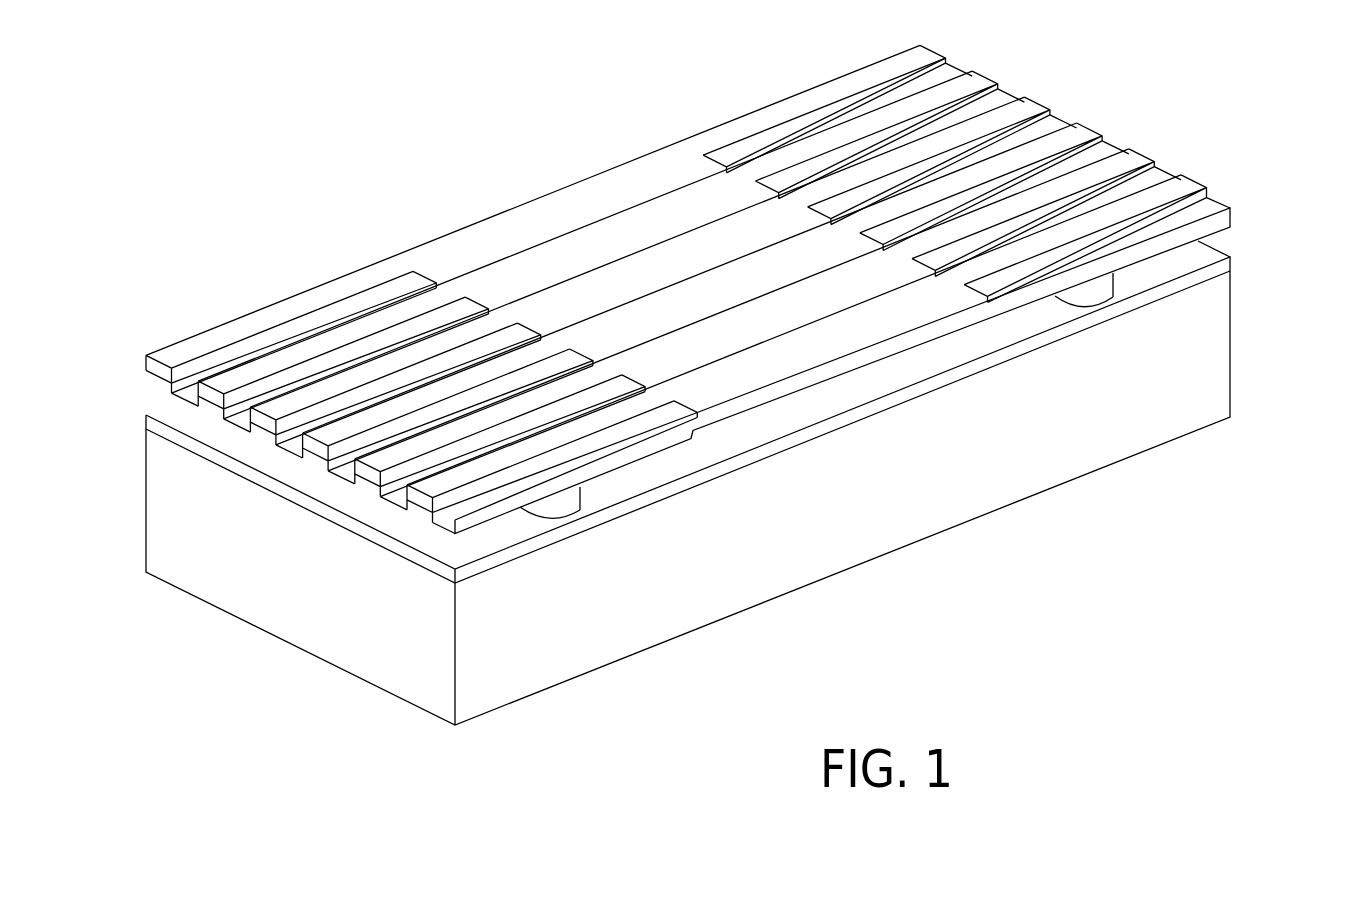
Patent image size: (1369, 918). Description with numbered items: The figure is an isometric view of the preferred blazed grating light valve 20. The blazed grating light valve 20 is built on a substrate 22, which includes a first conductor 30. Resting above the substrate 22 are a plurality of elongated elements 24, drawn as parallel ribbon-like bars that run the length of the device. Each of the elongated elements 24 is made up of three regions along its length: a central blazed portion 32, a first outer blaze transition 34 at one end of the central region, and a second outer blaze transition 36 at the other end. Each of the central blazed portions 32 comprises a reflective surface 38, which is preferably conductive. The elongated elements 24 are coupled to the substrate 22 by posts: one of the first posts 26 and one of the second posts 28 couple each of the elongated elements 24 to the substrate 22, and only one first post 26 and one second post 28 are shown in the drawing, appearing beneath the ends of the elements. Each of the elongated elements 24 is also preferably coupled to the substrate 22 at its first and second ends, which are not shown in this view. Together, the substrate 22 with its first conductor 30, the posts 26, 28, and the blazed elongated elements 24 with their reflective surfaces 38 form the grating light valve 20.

The blazed grating light valve 20 is at (334, 152).
The substrate 22 is at (1222, 380).
The elongated elements 24 is at (462, 245).
The first posts 26 is at (568, 508).
The second posts 28 is at (1093, 295).
The first conductor 30 is at (1227, 265).
The central blazed portion 32 is at (537, 215).
The first outer blaze transition 34 is at (345, 288).
The second outer blaze transition 36 is at (728, 132).
The reflective surface 38 is at (624, 178).